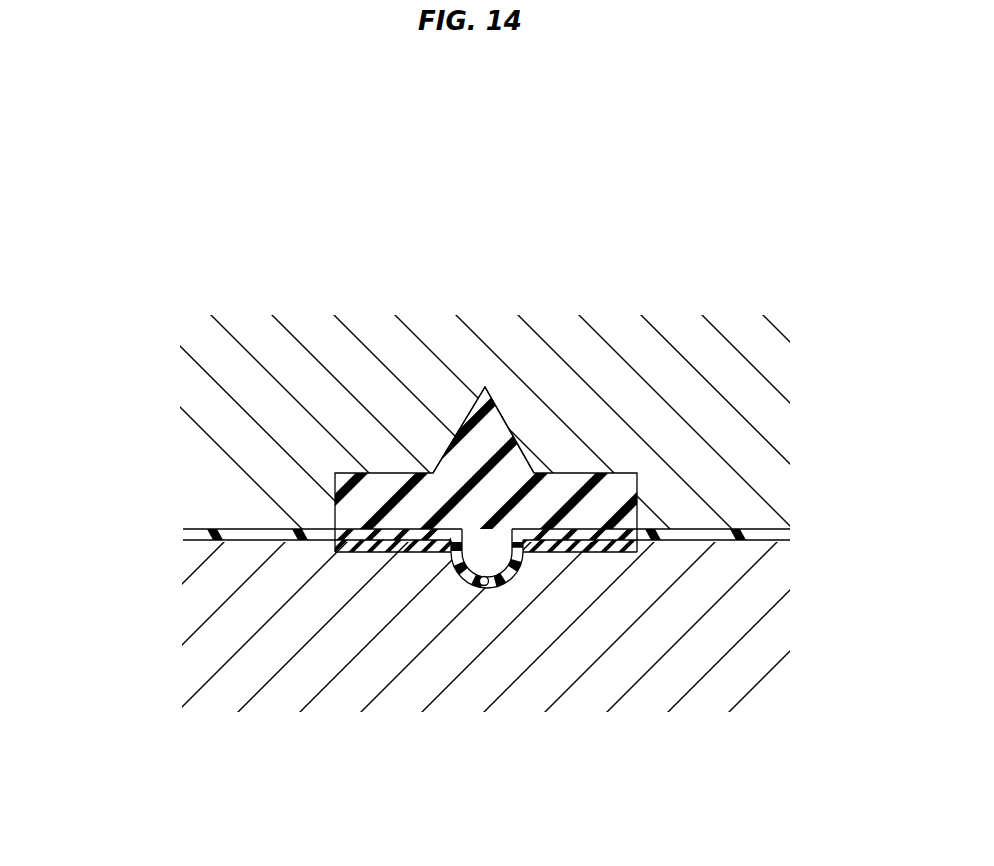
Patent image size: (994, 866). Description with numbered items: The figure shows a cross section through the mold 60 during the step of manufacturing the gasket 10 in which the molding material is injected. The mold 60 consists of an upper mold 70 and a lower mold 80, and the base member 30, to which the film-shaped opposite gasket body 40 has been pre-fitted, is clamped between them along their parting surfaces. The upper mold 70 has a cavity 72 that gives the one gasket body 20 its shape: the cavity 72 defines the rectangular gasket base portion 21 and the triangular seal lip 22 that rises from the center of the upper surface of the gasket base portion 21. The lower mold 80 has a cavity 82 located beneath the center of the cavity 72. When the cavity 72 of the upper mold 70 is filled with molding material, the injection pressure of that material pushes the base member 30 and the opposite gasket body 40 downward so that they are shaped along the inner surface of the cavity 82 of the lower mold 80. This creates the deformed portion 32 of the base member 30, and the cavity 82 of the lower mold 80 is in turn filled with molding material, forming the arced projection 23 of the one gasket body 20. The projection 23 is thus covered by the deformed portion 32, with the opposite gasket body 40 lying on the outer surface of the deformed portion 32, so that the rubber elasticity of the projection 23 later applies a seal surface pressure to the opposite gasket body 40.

The gasket 10 is at (442, 461).
The one gasket body 20 is at (558, 488).
The gasket base portion 21 is at (613, 497).
The seal lip 22 is at (492, 435).
The projection 23 is at (478, 582).
The base member 30 is at (262, 522).
The deformed portion 32 is at (520, 570).
The opposite gasket body 40 is at (525, 565).
The mold 60 is at (230, 317).
The upper mold 70 is at (207, 403).
The cavity 72 is at (497, 409).
The lower mold 80 is at (215, 647).
The cavity 82 is at (483, 590).